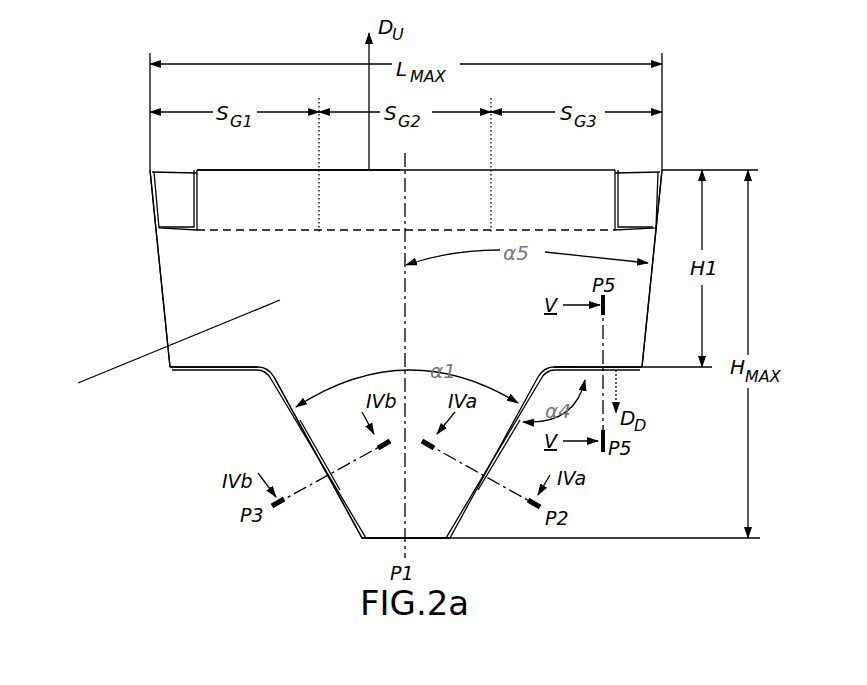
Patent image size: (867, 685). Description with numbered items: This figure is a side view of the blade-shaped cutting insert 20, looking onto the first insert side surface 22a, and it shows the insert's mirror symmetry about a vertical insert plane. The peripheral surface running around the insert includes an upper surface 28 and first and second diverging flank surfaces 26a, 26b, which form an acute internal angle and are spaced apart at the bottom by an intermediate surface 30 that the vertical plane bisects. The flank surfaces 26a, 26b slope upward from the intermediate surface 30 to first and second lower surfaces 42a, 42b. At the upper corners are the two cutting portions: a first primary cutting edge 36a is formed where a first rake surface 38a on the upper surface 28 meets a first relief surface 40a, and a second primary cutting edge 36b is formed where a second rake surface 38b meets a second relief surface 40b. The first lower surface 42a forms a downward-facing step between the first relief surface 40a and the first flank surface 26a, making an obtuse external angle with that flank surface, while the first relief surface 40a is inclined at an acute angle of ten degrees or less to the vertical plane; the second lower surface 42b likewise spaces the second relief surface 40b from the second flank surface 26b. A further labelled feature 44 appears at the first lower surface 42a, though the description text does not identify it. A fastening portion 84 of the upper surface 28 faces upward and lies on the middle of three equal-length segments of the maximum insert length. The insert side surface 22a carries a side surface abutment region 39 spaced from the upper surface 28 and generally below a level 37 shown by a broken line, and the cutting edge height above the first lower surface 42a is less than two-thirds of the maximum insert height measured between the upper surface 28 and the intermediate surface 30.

The cutting insert 20 is at (158, 302).
The first insert side surface 22a is at (330, 366).
The first flank surface 26a is at (510, 466).
The second flank surface 26b is at (305, 457).
The upper surface 28 is at (290, 168).
The intermediate surface 30 is at (430, 538).
The first primary cutting edge 36a is at (662, 170).
The second primary cutting edge 36b is at (150, 170).
The level 37 is at (240, 230).
The first rake surface 38a is at (640, 173).
The second rake surface 38b is at (168, 173).
The side surface abutment region 39 is at (158, 350).
The first relief surface 40a is at (657, 206).
The second relief surface 40b is at (153, 206).
The first lower surface 42a is at (627, 378).
The second lower surface 42b is at (195, 370).
The shoulder surface 44 is at (563, 366).
The fastening portion 84 is at (345, 168).